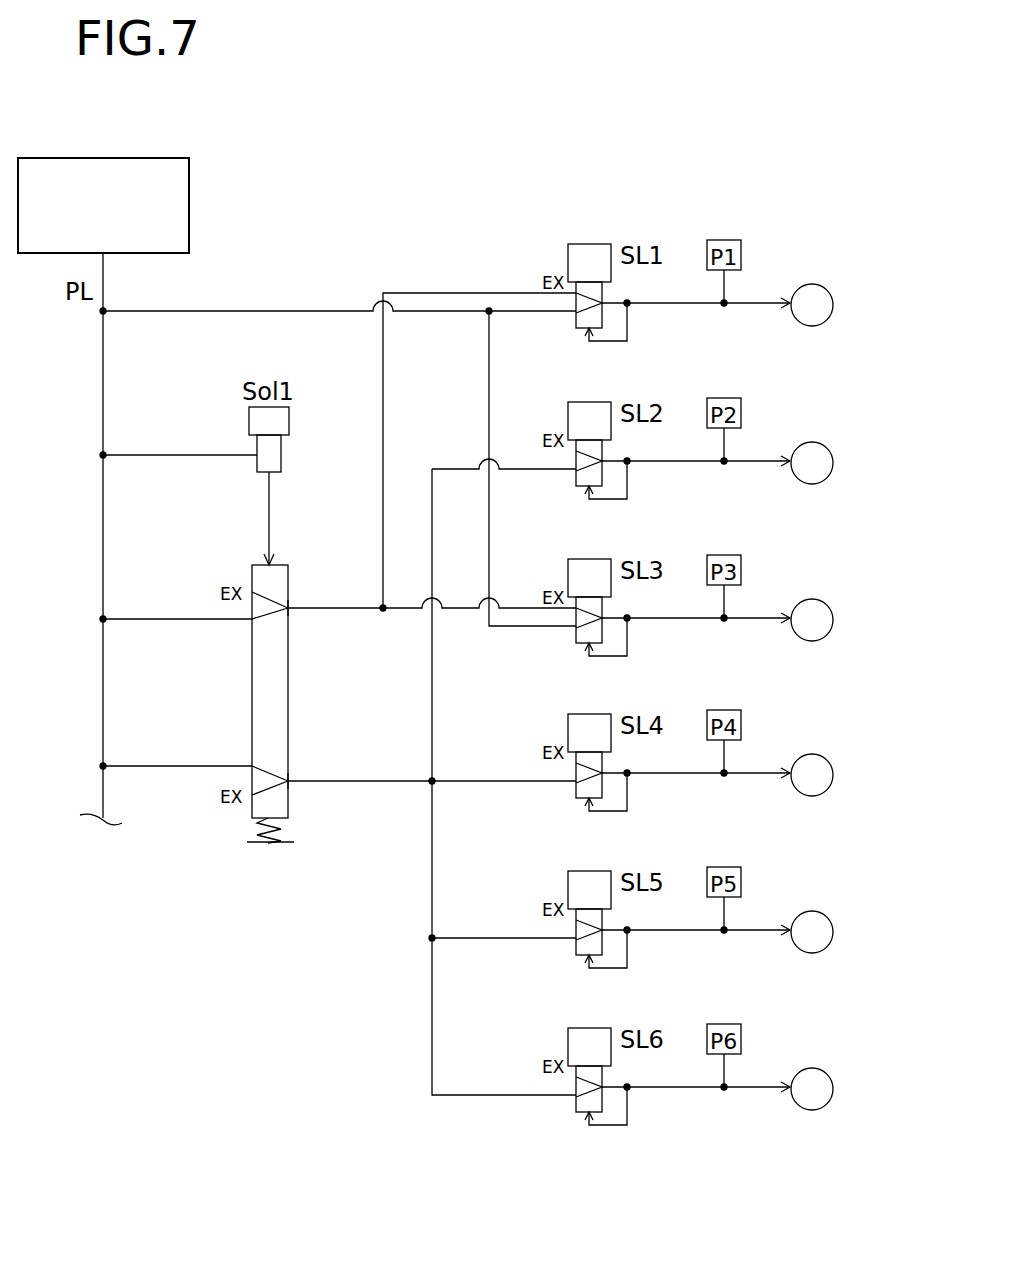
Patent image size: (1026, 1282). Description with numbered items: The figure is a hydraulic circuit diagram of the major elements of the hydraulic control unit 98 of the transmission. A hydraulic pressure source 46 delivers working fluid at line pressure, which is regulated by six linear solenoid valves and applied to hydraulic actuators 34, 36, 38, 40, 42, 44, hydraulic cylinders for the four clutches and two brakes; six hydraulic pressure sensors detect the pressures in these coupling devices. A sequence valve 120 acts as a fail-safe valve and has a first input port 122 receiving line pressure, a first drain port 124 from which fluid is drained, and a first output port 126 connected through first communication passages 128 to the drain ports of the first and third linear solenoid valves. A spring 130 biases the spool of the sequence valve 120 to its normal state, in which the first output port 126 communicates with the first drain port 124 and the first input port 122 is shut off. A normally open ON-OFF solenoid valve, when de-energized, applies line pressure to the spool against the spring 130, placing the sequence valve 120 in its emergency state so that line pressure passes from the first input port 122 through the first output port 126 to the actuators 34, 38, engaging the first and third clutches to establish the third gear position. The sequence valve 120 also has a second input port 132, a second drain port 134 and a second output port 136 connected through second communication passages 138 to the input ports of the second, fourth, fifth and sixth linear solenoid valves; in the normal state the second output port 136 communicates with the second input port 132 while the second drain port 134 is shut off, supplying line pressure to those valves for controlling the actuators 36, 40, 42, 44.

The hydraulic pressure source 46 is at (86, 165).
The hydraulic control unit 98 is at (708, 181).
The sequence valve 120 is at (295, 562).
The first input port 122 is at (249, 622).
The first drain port 124 is at (253, 592).
The first output port 126 is at (290, 603).
The first communication passages 128 is at (360, 610).
The spring 130 is at (258, 843).
The second input port 132 is at (252, 767).
The second drain port 134 is at (250, 798).
The second output port 136 is at (289, 780).
The second communication passages 138 is at (358, 783).
The hydraulic actuator 34 is at (818, 292).
The hydraulic actuator 36 is at (818, 450).
The hydraulic actuator 38 is at (818, 607).
The hydraulic actuator 40 is at (818, 762).
The hydraulic actuator 42 is at (818, 919).
The hydraulic actuator 44 is at (818, 1076).